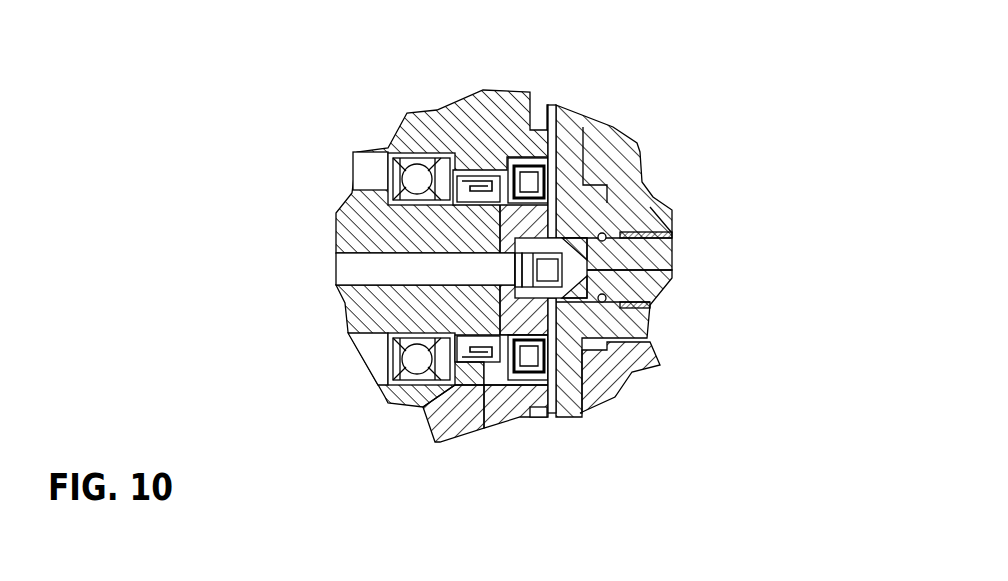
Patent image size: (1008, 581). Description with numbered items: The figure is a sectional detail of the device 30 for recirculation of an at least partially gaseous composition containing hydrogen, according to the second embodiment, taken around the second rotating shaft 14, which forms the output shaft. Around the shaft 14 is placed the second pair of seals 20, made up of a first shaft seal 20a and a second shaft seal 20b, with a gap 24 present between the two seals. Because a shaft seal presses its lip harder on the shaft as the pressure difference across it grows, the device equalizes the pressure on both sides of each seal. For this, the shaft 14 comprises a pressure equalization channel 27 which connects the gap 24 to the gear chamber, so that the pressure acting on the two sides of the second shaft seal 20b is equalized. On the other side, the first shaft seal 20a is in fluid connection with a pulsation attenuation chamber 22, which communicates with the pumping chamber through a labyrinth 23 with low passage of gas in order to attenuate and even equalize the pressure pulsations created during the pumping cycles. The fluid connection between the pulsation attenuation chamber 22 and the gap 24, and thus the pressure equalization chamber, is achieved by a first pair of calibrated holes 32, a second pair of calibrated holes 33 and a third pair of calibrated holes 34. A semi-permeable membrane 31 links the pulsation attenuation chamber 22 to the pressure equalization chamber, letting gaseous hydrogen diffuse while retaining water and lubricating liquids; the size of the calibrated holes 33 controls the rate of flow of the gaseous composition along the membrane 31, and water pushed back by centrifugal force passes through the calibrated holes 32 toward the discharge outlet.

The device for recirculation of an at least partially gaseous composition containing 30 is at (792, 42).
The second rotating shaft 14 is at (350, 190).
The pressure equalization channel 27 is at (340, 265).
The gap 24 is at (348, 335).
The pulsation attenuation chamber 22 is at (537, 110).
The second pair of calibrated holes 33 is at (587, 265).
The third pair of calibrated holes 34 is at (520, 272).
The first pair of calibrated holes 32 is at (556, 218).
The semi-permeable membrane 31 is at (556, 327).
The labyrinth 23 is at (625, 383).
The second pair of seals 20 is at (693, 481).
The first shaft seal 20a is at (473, 362).
The second shaft seal 20b is at (520, 377).